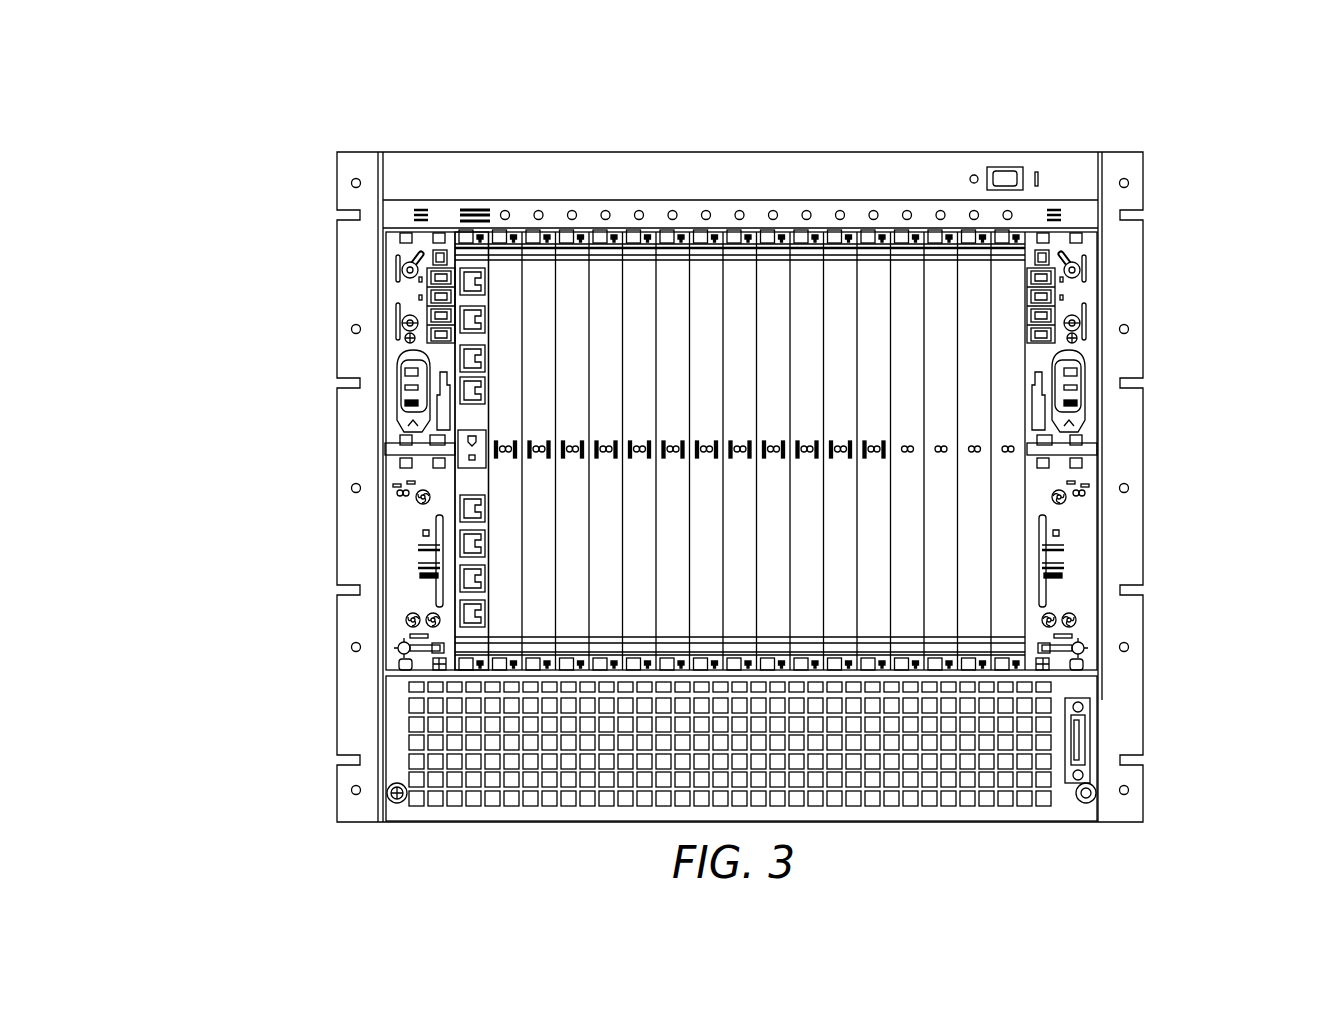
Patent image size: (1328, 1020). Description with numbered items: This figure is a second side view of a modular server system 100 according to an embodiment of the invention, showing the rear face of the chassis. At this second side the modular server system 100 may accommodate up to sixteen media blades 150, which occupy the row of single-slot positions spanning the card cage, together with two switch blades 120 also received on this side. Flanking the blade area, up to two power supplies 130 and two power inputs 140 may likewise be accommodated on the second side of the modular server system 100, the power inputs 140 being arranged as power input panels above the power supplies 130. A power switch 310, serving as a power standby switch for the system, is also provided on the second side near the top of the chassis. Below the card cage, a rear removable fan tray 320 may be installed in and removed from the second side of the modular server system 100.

The modular server system 100 is at (1248, 106).
The switch blades 120 is at (473, 278).
The power supplies 130 is at (420, 508).
The power inputs 140 is at (395, 293).
The media blades 150 is at (750, 100).
The power switch 310 is at (1005, 176).
The rear removable fan tray 320 is at (395, 730).